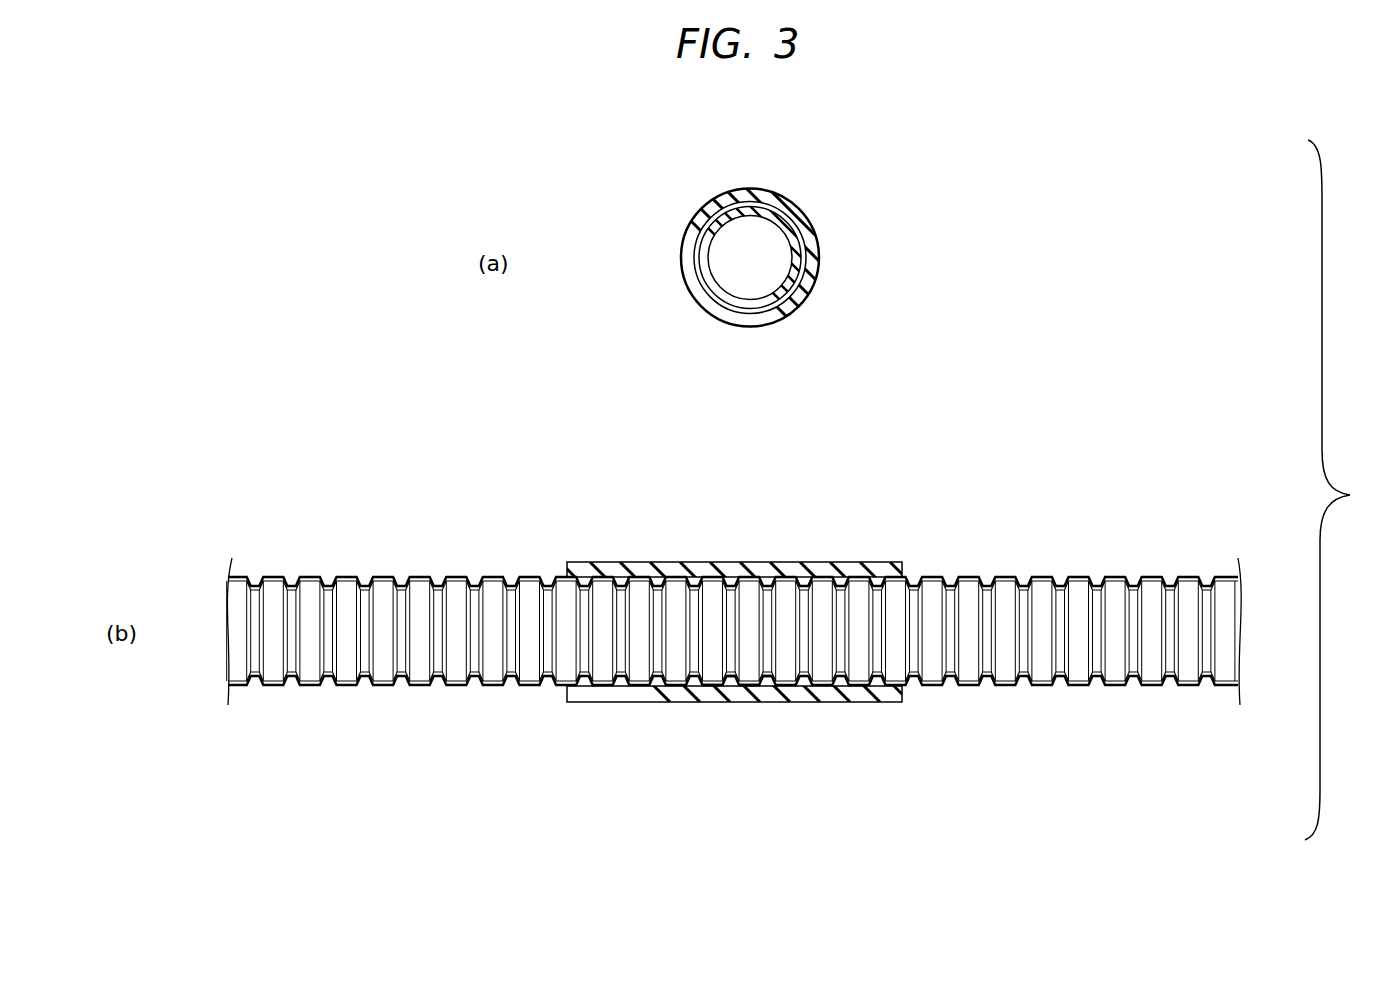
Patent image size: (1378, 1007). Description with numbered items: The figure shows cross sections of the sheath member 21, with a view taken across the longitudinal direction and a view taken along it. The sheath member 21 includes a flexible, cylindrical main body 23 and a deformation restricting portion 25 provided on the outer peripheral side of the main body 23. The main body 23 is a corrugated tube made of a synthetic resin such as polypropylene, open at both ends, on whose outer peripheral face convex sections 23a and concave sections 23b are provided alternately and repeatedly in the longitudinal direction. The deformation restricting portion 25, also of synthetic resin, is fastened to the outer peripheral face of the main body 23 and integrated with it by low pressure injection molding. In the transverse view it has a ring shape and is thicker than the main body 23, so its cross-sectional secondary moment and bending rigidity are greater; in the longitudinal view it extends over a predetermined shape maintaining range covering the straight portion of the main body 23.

The sheath member 21 is at (965, 468).
The main body 23 is at (718, 290).
The convex section 23a is at (710, 692).
The concave section 23b is at (733, 683).
The deformation restricting portion 25 is at (782, 193).